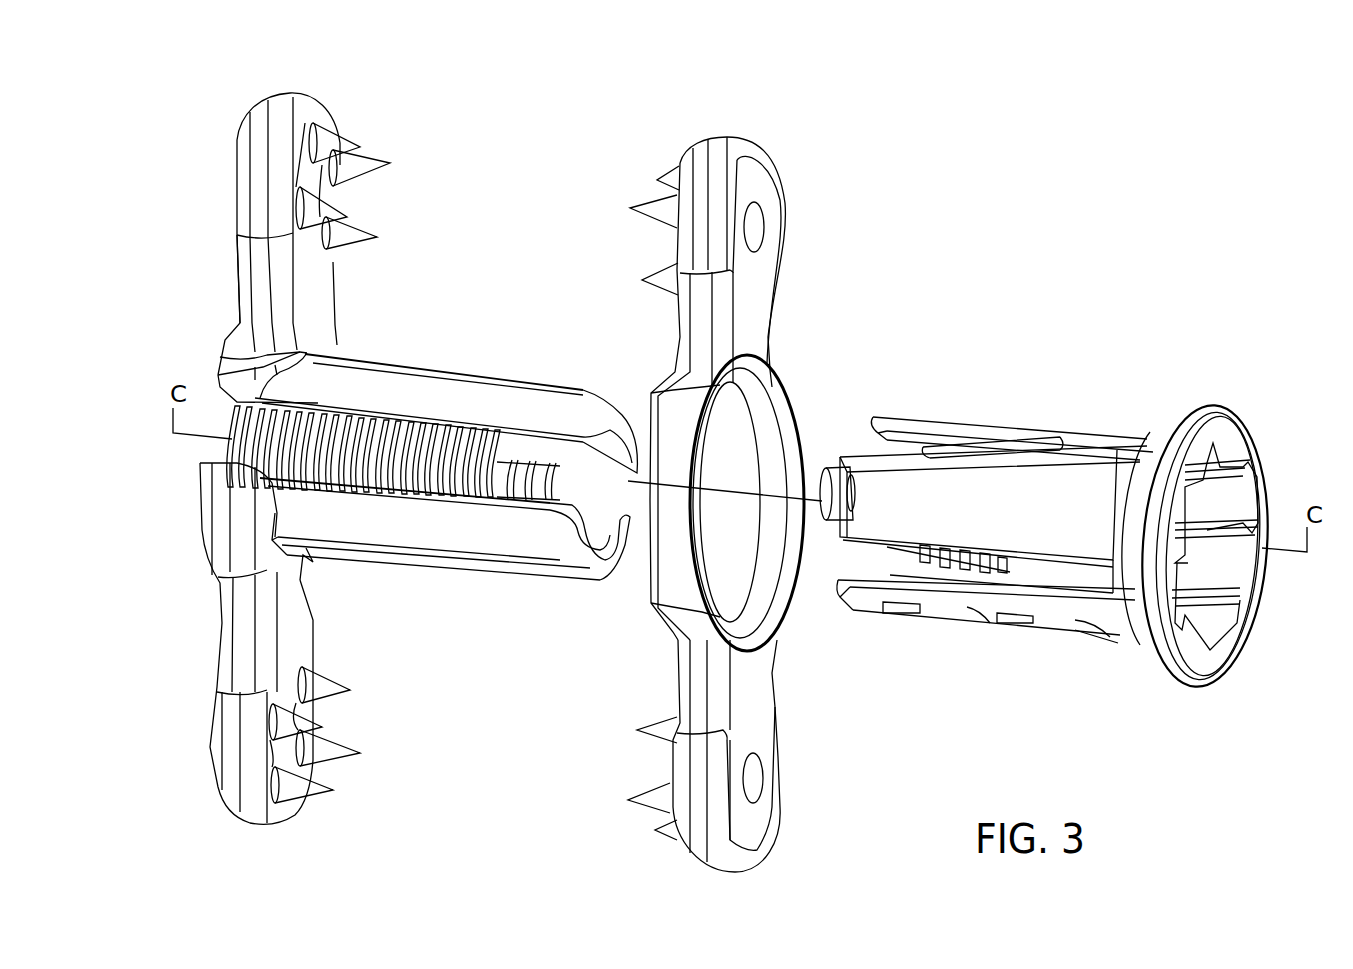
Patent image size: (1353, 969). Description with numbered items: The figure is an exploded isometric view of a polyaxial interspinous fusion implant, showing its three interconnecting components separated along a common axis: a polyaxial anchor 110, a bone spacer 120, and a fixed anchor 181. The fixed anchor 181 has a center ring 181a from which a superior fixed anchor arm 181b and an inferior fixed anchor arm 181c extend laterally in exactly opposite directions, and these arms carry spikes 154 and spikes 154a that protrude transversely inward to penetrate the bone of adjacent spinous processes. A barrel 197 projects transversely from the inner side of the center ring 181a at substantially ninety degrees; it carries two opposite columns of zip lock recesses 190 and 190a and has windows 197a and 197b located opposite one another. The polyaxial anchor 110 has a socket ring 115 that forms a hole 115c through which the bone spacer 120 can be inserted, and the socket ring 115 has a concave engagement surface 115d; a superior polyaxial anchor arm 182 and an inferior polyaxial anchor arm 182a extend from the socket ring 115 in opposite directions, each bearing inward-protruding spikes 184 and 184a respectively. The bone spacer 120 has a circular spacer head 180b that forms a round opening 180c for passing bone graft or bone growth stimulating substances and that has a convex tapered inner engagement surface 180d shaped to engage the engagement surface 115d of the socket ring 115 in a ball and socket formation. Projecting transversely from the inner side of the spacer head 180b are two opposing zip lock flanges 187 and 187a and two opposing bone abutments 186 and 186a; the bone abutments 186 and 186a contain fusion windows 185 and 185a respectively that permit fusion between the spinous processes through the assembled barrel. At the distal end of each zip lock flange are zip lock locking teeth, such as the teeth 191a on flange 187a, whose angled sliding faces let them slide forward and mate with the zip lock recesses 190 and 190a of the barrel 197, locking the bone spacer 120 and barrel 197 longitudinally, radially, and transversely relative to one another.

The polyaxial anchor 110 is at (790, 137).
The socket ring 115 is at (797, 420).
The hole 115c is at (728, 545).
The engagement surface 115d is at (767, 402).
The bone spacer 120 is at (1223, 403).
The spikes 154 is at (370, 177).
The spikes 154a is at (323, 683).
The spacer head 180b is at (1243, 577).
The round opening 180c is at (1213, 583).
The inner engagement surface 180d is at (1163, 440).
The fixed anchor 181 is at (358, 84).
The center ring 181a is at (237, 327).
The superior fixed anchor arm 181b is at (285, 117).
The inferior fixed anchor arm 181c is at (245, 813).
The superior polyaxial anchor arm 182 is at (720, 147).
The inferior polyaxial anchor arm 182a is at (697, 810).
The spikes 184 is at (648, 207).
The spikes 184a is at (653, 723).
The fusion windows 185 is at (1065, 460).
The fusion windows 185a is at (903, 610).
The bone abutment 186 is at (913, 418).
The bone abutment 186a is at (860, 602).
The zip lock flange 187 is at (983, 490).
The zip lock flange 187a is at (1057, 567).
The zip lock recesses 190 is at (383, 440).
The zip lock recesses 190a is at (510, 483).
The zip lock locking teeth 191a is at (947, 565).
The barrel 197 is at (460, 400).
The window 197a is at (607, 410).
The window 197b is at (573, 563).